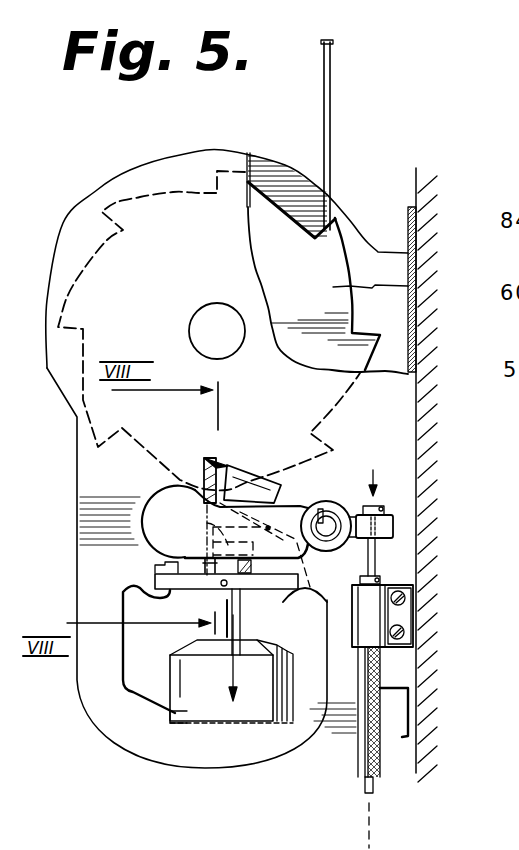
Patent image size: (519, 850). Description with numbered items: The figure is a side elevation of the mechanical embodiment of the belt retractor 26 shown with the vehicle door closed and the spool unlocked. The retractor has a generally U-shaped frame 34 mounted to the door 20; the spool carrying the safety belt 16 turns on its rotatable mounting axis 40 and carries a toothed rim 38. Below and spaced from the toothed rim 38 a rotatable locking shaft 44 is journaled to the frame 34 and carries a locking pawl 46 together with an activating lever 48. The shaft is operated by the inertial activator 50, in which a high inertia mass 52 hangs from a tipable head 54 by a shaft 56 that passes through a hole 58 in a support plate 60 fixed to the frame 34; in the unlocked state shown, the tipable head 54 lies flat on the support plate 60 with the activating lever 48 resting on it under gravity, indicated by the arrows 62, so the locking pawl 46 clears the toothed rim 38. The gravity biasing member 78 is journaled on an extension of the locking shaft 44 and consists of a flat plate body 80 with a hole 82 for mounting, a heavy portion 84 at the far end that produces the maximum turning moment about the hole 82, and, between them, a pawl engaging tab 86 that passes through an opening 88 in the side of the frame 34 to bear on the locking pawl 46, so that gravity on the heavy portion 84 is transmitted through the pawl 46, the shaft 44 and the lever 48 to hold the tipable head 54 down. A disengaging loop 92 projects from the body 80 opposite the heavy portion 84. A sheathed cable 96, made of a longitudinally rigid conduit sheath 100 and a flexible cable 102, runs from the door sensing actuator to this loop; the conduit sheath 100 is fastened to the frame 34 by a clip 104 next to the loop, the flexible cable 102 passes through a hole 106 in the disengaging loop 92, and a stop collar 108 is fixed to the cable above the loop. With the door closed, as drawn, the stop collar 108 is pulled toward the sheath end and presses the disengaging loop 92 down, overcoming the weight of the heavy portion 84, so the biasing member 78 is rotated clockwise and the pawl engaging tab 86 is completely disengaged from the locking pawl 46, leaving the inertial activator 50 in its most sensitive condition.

The safety belt 16 is at (322, 53).
The door 20 is at (420, 172).
The retractor 26 is at (352, 172).
The frame 34 is at (130, 183).
The toothed rim 38 is at (262, 213).
The rotatable mounting axis 40 is at (207, 322).
The rotatable locking shaft 44 is at (333, 524).
The locking pawl 46 is at (283, 510).
The activating lever 48 is at (207, 523).
The inertial activator 50 is at (184, 634).
The high inertia mass 52 is at (183, 710).
The tipable head 54 is at (157, 565).
The shaft 56 is at (230, 592).
The hole 58 is at (221, 588).
The support plate 60 is at (155, 580).
The arrows 62 is at (240, 674).
The gravity biasing member 78 is at (152, 478).
The flat plate body 80 is at (268, 530).
The hole 82 is at (315, 501).
The heavy portion 84 is at (145, 510).
The pawl engaging tab 86 is at (247, 471).
The opening 88 is at (204, 459).
The disengaging loop 92 is at (393, 522).
The sheathed cable 96 is at (380, 756).
The conduit sheath 100 is at (382, 578).
The flexible cable 102 is at (378, 559).
The clip 104 is at (392, 647).
The hole 106 is at (393, 540).
The stop collar 108 is at (378, 508).